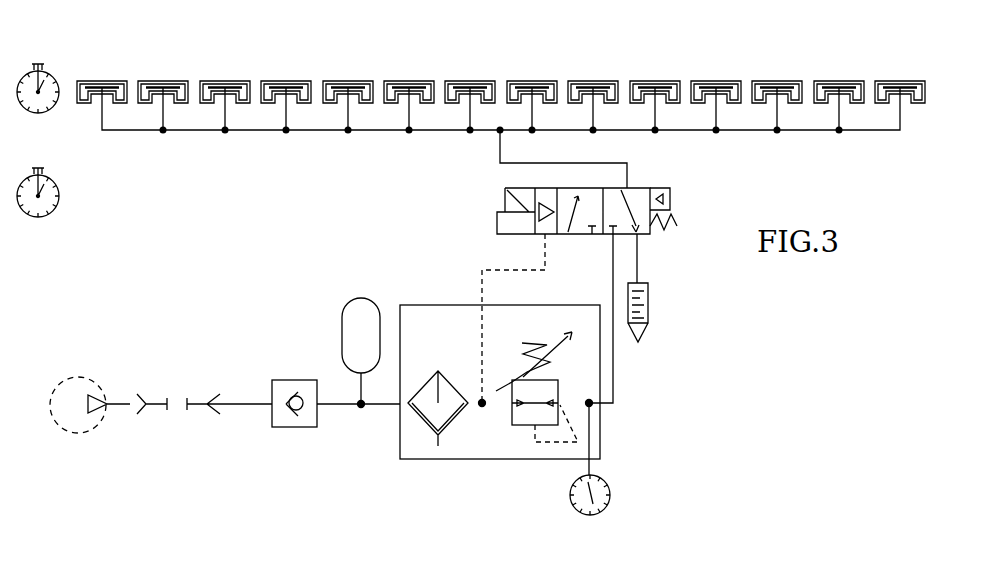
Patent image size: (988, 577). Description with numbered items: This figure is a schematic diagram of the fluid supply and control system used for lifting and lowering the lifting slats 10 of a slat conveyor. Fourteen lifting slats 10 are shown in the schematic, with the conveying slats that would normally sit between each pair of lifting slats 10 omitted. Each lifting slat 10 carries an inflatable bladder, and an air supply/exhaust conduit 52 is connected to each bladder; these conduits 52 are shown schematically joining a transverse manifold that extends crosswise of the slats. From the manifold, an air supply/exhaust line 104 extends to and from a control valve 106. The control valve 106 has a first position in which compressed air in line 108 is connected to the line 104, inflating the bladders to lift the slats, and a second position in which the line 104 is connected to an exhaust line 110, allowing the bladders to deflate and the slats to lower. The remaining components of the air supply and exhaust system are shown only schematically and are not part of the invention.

The lifting slat 10 is at (143, 81).
The air supply/exhaust conduit 52 is at (102, 113).
The air supply/exhaust line 104 is at (507, 164).
The control valve 106 is at (498, 234).
The compressed air line 108 is at (615, 371).
The exhaust line 110 is at (640, 256).